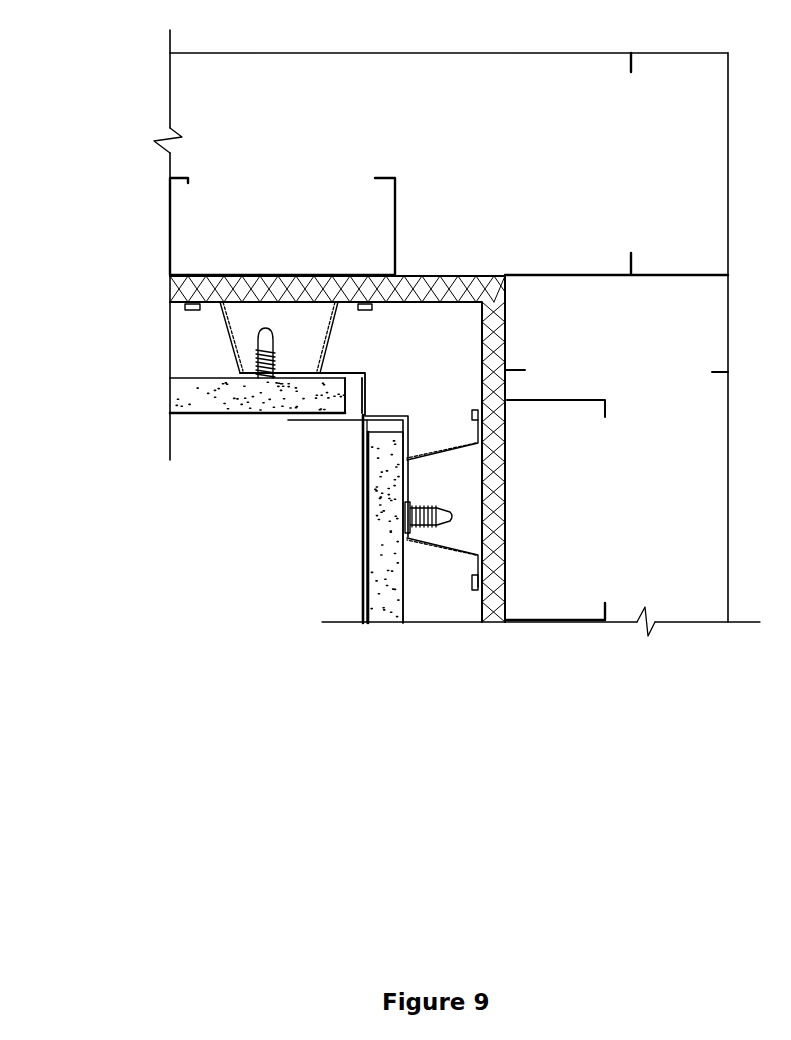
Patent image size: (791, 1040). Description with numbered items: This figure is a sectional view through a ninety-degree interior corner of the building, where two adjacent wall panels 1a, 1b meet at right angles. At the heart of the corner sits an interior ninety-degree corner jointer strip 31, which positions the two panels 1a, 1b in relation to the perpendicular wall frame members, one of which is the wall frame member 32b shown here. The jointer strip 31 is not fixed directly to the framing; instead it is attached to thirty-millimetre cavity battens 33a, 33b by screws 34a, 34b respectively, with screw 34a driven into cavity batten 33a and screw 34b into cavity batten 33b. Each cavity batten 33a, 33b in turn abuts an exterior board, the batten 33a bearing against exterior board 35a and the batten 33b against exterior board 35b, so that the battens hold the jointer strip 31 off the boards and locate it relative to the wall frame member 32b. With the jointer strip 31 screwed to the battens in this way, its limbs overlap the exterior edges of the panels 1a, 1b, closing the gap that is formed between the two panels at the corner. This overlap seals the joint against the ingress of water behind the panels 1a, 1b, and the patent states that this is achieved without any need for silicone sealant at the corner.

The panel 1a is at (362, 600).
The panel 1b is at (192, 393).
The interior 90° corner jointer strip 31 is at (330, 502).
The wall frame member 32b is at (247, 234).
The cavity batten 33a is at (443, 550).
The cavity batten 33b is at (190, 365).
The screw 34a is at (425, 527).
The screw 34b is at (258, 357).
The exterior board 35a is at (507, 622).
The exterior board 35b is at (185, 300).